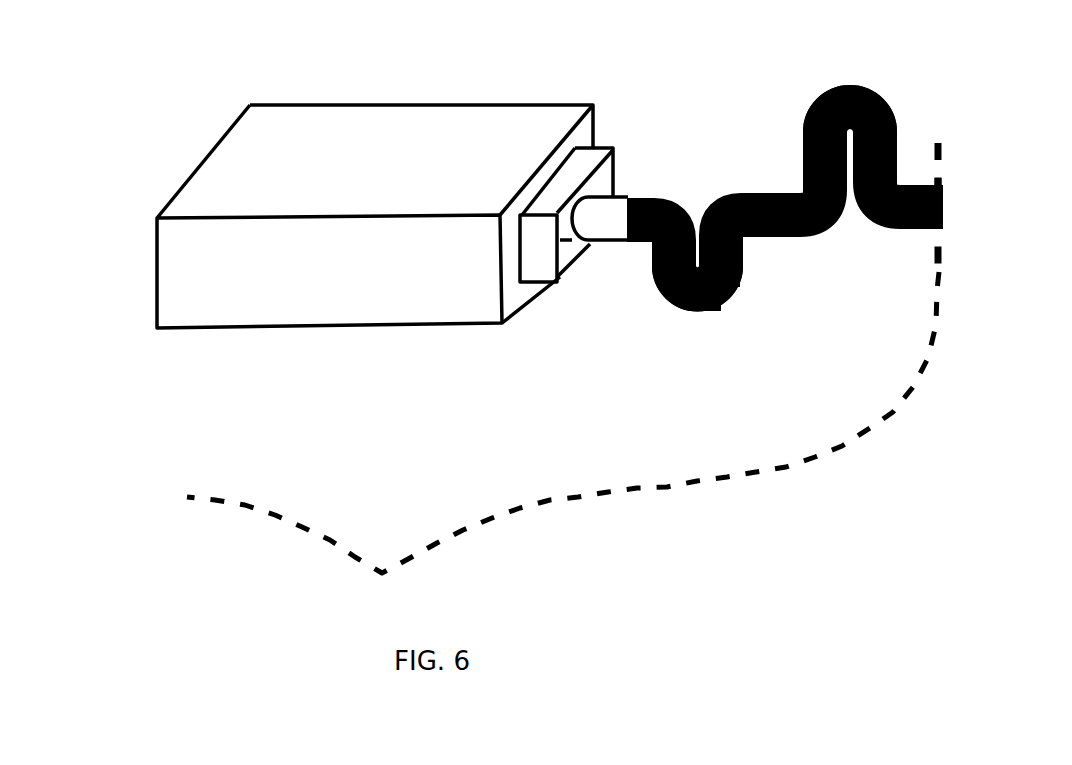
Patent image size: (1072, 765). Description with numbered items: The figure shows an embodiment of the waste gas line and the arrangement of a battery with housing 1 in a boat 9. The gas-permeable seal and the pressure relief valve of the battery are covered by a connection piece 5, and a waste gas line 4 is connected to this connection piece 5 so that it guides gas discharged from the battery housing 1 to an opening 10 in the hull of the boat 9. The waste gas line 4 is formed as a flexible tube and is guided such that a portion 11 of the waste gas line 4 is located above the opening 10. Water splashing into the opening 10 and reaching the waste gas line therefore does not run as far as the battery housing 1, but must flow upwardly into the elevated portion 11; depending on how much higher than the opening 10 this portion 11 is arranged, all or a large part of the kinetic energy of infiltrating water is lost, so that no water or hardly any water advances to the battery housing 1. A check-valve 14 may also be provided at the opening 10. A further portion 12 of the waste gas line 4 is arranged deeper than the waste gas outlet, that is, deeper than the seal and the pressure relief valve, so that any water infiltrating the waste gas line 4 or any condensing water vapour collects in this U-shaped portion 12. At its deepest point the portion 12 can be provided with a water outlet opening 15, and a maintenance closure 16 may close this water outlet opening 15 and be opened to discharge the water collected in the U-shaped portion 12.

The battery housing 1 is at (375, 216).
The waste gas line 4 is at (753, 192).
The connection piece 5 is at (574, 215).
The boat 9 is at (860, 464).
The opening 10 is at (943, 218).
The elevated portion of the waste gas line 11 is at (850, 68).
The U-shaped portion of the waste gas line 12 is at (678, 332).
The check-valve 14 is at (955, 188).
The water outlet opening 15 is at (729, 316).
The maintenance closure 16 is at (733, 282).